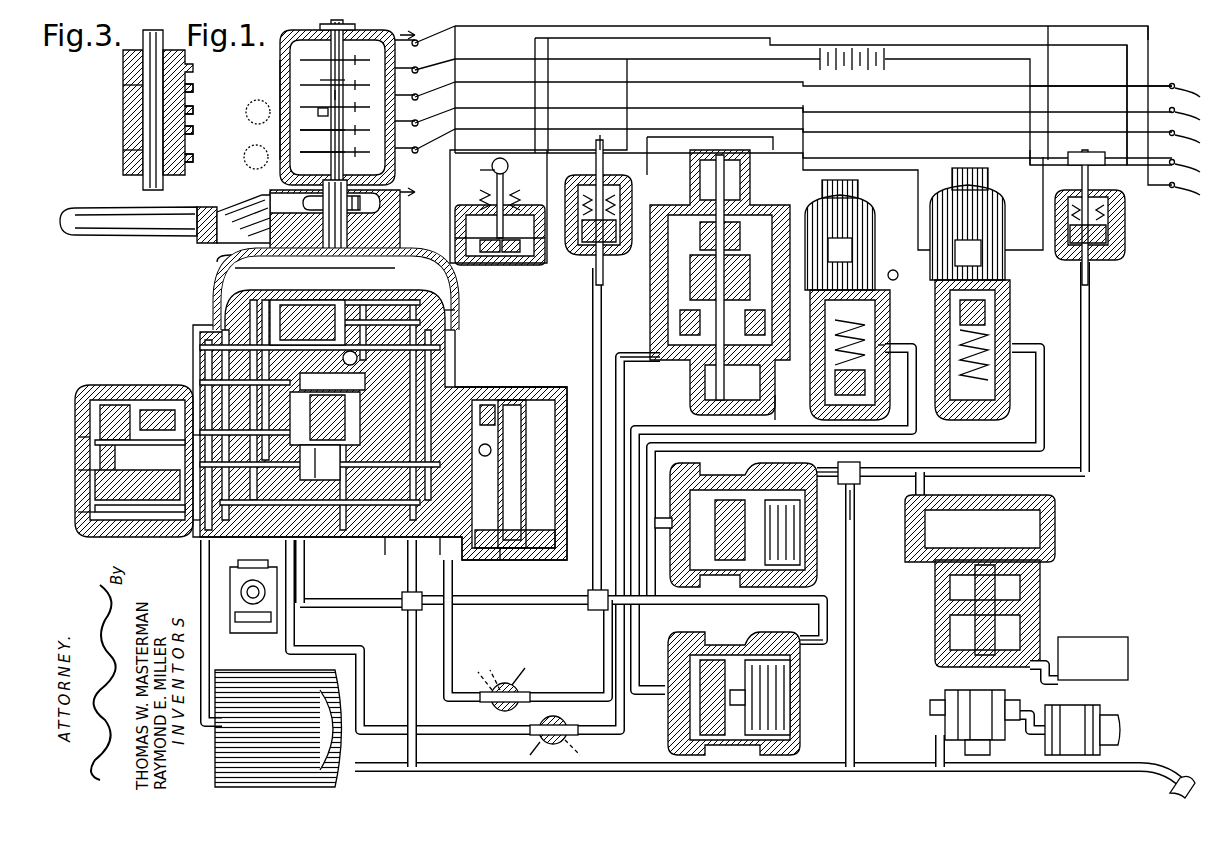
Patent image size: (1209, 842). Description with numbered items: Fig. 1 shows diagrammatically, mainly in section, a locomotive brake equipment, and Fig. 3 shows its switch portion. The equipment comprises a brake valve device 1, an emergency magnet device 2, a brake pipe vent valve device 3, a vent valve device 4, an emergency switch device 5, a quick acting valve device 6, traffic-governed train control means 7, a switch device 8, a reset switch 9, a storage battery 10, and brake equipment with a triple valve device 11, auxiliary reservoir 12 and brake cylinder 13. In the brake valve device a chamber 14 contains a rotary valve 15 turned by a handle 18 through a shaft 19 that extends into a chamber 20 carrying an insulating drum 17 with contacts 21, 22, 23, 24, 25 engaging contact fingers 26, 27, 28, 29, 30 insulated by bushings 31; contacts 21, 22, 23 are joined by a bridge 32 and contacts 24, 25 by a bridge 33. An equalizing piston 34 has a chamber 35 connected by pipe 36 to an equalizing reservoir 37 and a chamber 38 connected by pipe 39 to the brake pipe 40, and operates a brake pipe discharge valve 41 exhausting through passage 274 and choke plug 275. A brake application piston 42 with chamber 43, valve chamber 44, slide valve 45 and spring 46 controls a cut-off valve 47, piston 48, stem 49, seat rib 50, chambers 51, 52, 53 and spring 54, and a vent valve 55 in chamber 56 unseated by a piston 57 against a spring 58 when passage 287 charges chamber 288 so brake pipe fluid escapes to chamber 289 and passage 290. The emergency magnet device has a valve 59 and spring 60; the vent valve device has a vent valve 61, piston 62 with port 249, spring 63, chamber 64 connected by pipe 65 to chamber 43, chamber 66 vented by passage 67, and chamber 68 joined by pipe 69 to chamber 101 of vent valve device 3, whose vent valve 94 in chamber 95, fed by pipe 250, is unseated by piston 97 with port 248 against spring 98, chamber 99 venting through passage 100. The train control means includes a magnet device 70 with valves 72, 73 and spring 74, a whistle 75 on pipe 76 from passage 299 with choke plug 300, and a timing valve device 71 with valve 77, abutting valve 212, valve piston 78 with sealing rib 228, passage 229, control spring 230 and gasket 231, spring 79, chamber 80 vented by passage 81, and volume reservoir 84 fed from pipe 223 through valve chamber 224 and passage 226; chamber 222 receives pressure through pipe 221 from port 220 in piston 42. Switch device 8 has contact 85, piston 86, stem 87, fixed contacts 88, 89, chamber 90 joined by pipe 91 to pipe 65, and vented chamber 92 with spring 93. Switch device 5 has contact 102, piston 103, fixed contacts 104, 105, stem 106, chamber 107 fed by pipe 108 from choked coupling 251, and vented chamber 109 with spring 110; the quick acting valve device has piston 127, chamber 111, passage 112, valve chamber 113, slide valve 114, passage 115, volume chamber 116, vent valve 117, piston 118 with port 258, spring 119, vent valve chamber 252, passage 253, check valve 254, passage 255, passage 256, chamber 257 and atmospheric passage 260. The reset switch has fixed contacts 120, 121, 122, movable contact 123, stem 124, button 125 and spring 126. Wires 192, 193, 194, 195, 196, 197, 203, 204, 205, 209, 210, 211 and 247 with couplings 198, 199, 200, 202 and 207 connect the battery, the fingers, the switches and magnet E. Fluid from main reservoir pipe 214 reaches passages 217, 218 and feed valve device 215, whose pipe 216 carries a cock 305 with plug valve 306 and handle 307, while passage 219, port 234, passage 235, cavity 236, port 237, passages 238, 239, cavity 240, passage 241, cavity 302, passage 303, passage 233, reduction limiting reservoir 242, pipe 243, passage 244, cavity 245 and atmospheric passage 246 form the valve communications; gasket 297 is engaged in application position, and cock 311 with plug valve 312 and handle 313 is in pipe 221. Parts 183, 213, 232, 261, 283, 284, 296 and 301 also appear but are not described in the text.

In FIG. 1, the brake valve device 1 is at (208, 281).
In FIG. 1, the emergency magnet device 2 is at (1005, 196).
In FIG. 1, the brake pipe vent valve device 3 is at (753, 476).
In FIG. 1, the vent valve device 4 is at (732, 650).
In FIG. 1, the emergency switch device 5 is at (1117, 232).
In FIG. 1, the quick acting valve device 6 is at (1064, 506).
In FIG. 1, the train control means 7 is at (777, 221).
In FIG. 1, the switch device 8 is at (565, 176).
In FIG. 1, the reset switch 9 is at (476, 199).
In FIG. 1, the storage battery 10 is at (846, 72).
In FIG. 1, the triple valve device 11 is at (933, 712).
In FIG. 1, the auxiliary reservoir 12 is at (1135, 663).
In FIG. 1, the brake cylinder 13 is at (1106, 710).
In FIG. 1, the chamber 14 is at (228, 262).
In FIG. 1, the rotary valve 15 is at (252, 270).
In FIG. 3, the insulating sleeve or drum 17 is at (123, 113).
In FIG. 1, the insulating sleeve or drum 17 is at (295, 33).
In FIG. 1, the handle 18 is at (213, 214).
In FIG. 1, the shaft 19 is at (398, 224).
In FIG. 1, the chamber 20 is at (300, 63).
In FIG. 3, the contact 21 is at (193, 68).
In FIG. 1, the contact 21 is at (320, 82).
In FIG. 3, the contact 22 is at (193, 88).
In FIG. 1, the contact 22 is at (338, 95).
In FIG. 3, the contact 23 is at (193, 110).
In FIG. 1, the contact 23 is at (322, 116).
In FIG. 3, the contact 24 is at (193, 130).
In FIG. 1, the contact 24 is at (320, 131).
In FIG. 3, the contact 25 is at (193, 158).
In FIG. 1, the contact 25 is at (300, 165).
In FIG. 1, the contact finger 26 is at (395, 27).
In FIG. 1, the contact finger 27 is at (420, 72).
In FIG. 1, the contact finger 28 is at (416, 96).
In FIG. 1, the contact finger 29 is at (418, 122).
In FIG. 1, the contact finger 30 is at (418, 148).
In FIG. 1, the insulating bushings 31 is at (423, 96).
In FIG. 3, the bridge 32 is at (123, 85).
In FIG. 1, the bridge 32 is at (258, 112).
In FIG. 3, the bridge 33 is at (123, 150).
In FIG. 1, the bridge 33 is at (256, 157).
In FIG. 1, the equalizing piston 34 is at (332, 381).
In FIG. 1, the chamber 35 is at (294, 358).
In FIG. 1, the passage and pipe 36 is at (576, 416).
In FIG. 1, the equalizing reservoir 37 is at (397, 547).
In FIG. 1, the chamber 38 is at (312, 451).
In FIG. 1, the passage and pipe 39 is at (405, 625).
In FIG. 1, the brake pipe 40 is at (455, 761).
In FIG. 1, the brake pipe discharge valve 41 is at (307, 461).
In FIG. 1, the piston 42 is at (565, 555).
In FIG. 1, the chamber 43 is at (567, 565).
In FIG. 1, the valve chamber 44 is at (556, 517).
In FIG. 1, the slide valve 45 is at (556, 501).
In FIG. 1, the spring 46 is at (588, 594).
In FIG. 1, the valve 47 is at (178, 400).
In FIG. 1, the piston 48 is at (108, 400).
In FIG. 1, the stem 49 is at (145, 400).
In FIG. 1, the seat rib 50 is at (160, 400).
In FIG. 1, the chamber 51 is at (165, 400).
In FIG. 1, the chamber 52 is at (128, 400).
In FIG. 1, the chamber 53 is at (100, 400).
In FIG. 1, the spring 54 is at (82, 386).
In FIG. 1, the vent valve 55 is at (110, 530).
In FIG. 1, the chamber 56 is at (125, 537).
In FIG. 1, the piston 57 is at (90, 532).
In FIG. 1, the spring 58 is at (193, 525).
In FIG. 1, the valve 59 is at (1012, 285).
In FIG. 1, the spring 60 is at (995, 403).
In FIG. 1, the vent valve 61 is at (785, 742).
In FIG. 1, the piston 62 is at (722, 740).
In FIG. 1, the spring 63 is at (802, 675).
In FIG. 1, the chamber 64 is at (802, 720).
In FIG. 1, the pipe and passage 65 is at (515, 606).
In FIG. 1, the chamber 66 is at (733, 756).
In FIG. 1, the passage 67 is at (752, 742).
In FIG. 1, the chamber 68 is at (690, 700).
In FIG. 1, the pipe 69 is at (1044, 380).
In FIG. 1, the magnet device 70 is at (872, 222).
In FIG. 1, the timing valve device 71 is at (755, 182).
In FIG. 1, the valve 72 is at (850, 346).
In FIG. 1, the valve 73 is at (860, 398).
In FIG. 1, the spring 74 is at (850, 412).
In FIG. 1, the whistle 75 is at (895, 283).
In FIG. 1, the pipe 76 is at (888, 342).
In FIG. 1, the valve 77 is at (750, 227).
In FIG. 1, the valve piston 78 is at (752, 292).
In FIG. 1, the spring 79 is at (735, 165).
In FIG. 1, the chamber 80 is at (752, 278).
In FIG. 1, the passage 81 is at (752, 262).
In FIG. 1, the volume reservoir 84 is at (725, 398).
In FIG. 1, the movable contact member 85 is at (597, 137).
In FIG. 1, the piston 86 is at (615, 248).
In FIG. 1, the piston stem 87 is at (600, 163).
In FIG. 1, the fixed contact 88 is at (590, 150).
In FIG. 1, the fixed contact 89 is at (632, 125).
In FIG. 1, the chamber 90 is at (575, 250).
In FIG. 1, the pipe 91 is at (592, 328).
In FIG. 1, the vented chamber 92 is at (635, 178).
In FIG. 1, the spring 93 is at (633, 200).
In FIG. 1, the vent valve 94 is at (780, 575).
In FIG. 1, the chamber 95 is at (810, 560).
In FIG. 1, the piston 97 is at (728, 570).
In FIG. 1, the spring 98 is at (845, 512).
In FIG. 1, the chamber 99 is at (708, 490).
In FIG. 1, the passage 100 is at (750, 570).
In FIG. 1, the chamber 101 is at (680, 575).
In FIG. 1, the movable contact member 102 is at (1082, 155).
In FIG. 1, the piston 103 is at (1126, 238).
In FIG. 1, the fixed contact 104 is at (1072, 165).
In FIG. 1, the fixed contact 105 is at (1098, 156).
In FIG. 1, the piston stem 106 is at (1090, 172).
In FIG. 1, the chamber 107 is at (1115, 258).
In FIG. 1, the pipe 108 is at (1090, 420).
In FIG. 1, the vented chamber 109 is at (1110, 212).
In FIG. 1, the spring 110 is at (1110, 200).
In FIG. 1, the chamber 111 is at (935, 570).
In FIG. 1, the passage 112 is at (905, 548).
In FIG. 1, the valve chamber 113 is at (1042, 604).
In FIG. 1, the slide valve 114 is at (1042, 585).
In FIG. 1, the passage 115 is at (1042, 565).
In FIG. 1, the volume chamber 116 is at (1057, 530).
In FIG. 1, the vent valve 117 is at (940, 665).
In FIG. 1, the piston 118 is at (1099, 662).
In FIG. 1, the spring 119 is at (935, 648).
In FIG. 1, the fixed contact 120 is at (455, 238).
In FIG. 1, the fixed contact 121 is at (485, 255).
In FIG. 1, the fixed contact 122 is at (510, 255).
In FIG. 1, the movable contact member 123 is at (477, 159).
In FIG. 1, the stem 124 is at (508, 200).
In FIG. 1, the button 125 is at (505, 166).
In FIG. 1, the spring 126 is at (505, 185).
In FIG. 1, the piston 127 is at (935, 585).
In FIG. 1, the valve 183 is at (728, 376).
In FIG. 1, the wire 192 is at (765, 58).
In FIG. 1, the wire 193 is at (492, 152).
In FIG. 1, the wire 194 is at (497, 58).
In FIG. 1, the wire 195 is at (735, 82).
In FIG. 1, the wire 196 is at (742, 106).
In FIG. 1, the wire 197 is at (742, 129).
In FIG. 1, the coupling 198 is at (1190, 80).
In FIG. 1, the coupling 199 is at (1183, 104).
In FIG. 1, the coupling 200 is at (1187, 127).
In FIG. 1, the coupling 202 is at (1187, 153).
In FIG. 1, the wire 203 is at (1168, 182).
In FIG. 1, the wire 204 is at (995, 158).
In FIG. 1, the wire 205 is at (1000, 62).
In FIG. 1, the coupling 207 is at (1190, 183).
In FIG. 1, the wire 209 is at (1158, 32).
In FIG. 1, the wire 210 is at (1043, 235).
In FIG. 1, the wire 211 is at (918, 178).
In FIG. 1, the valve 212 is at (755, 240).
In FIG. 1, the reservoir 213 is at (268, 672).
In FIG. 1, the main reservoir pipe 214 is at (203, 636).
In FIG. 1, the feed valve device 215 is at (252, 562).
In FIG. 1, the pipe 216 is at (915, 432).
In FIG. 1, the passage 217 is at (196, 328).
In FIG. 1, the passage 218 is at (400, 509).
In FIG. 1, the passage 219 is at (307, 318).
In FIG. 1, the port 220 is at (560, 531).
In FIG. 1, the passage and pipe 221 is at (606, 638).
In FIG. 1, the chamber 222 is at (760, 198).
In FIG. 1, the pipe 223 is at (780, 413).
In FIG. 1, the valve chamber 224 is at (776, 412).
In FIG. 1, the passage 226 is at (752, 316).
In FIG. 1, the sealing rib 228 is at (668, 309).
In FIG. 1, the passage 229 is at (752, 305).
In FIG. 1, the control spring 230 is at (700, 251).
In FIG. 1, the gasket 231 is at (668, 275).
In FIG. 1, the chamber 232 is at (690, 229).
In FIG. 1, the passage 233 is at (668, 292).
In FIG. 1, the port 234 is at (299, 237).
In FIG. 1, the passage 235 is at (458, 333).
In FIG. 1, the cavity 236 is at (560, 390).
In FIG. 1, the port 237 is at (330, 301).
In FIG. 1, the passage 238 is at (330, 318).
In FIG. 1, the passage 239 is at (576, 481).
In FIG. 1, the cavity 240 is at (556, 465).
In FIG. 1, the passage 241 is at (78, 437).
In FIG. 1, the reduction limiting reservoir 242 is at (446, 547).
In FIG. 1, the pipe and passage 243 is at (400, 522).
In FIG. 1, the passage 244 is at (458, 314).
In FIG. 1, the cavity 245 is at (392, 272).
In FIG. 1, the atmospheric passage 246 is at (338, 358).
In FIG. 1, the wire 247 is at (452, 180).
In FIG. 1, the port 248 is at (680, 465).
In FIG. 1, the port 249 is at (718, 655).
In FIG. 1, the passage and pipe 250 is at (845, 484).
In FIG. 1, the choked coupling 251 is at (935, 472).
In FIG. 1, the vent valve chamber 252 is at (935, 632).
In FIG. 1, the passage 253 is at (1057, 549).
In FIG. 1, the check valve 254 is at (1042, 612).
In FIG. 1, the passage 255 is at (1042, 620).
In FIG. 1, the passage 256 is at (1042, 630).
In FIG. 1, the vent valve piston chamber 257 is at (1099, 674).
In FIG. 1, the port 258 is at (1099, 649).
In FIG. 1, the passage 260 is at (1005, 667).
In FIG. 1, the wire 261 is at (1127, 72).
In FIG. 1, the passage 274 is at (370, 480).
In FIG. 1, the choke plug 275 is at (323, 571).
In FIG. 1, the chamber 283 is at (1017, 521).
In FIG. 1, the chamber 284 is at (935, 605).
In FIG. 1, the passage 287 is at (326, 331).
In FIG. 1, the chamber 288 is at (78, 512).
In FIG. 1, the chamber 289 is at (78, 470).
In FIG. 1, the passage 290 is at (95, 537).
In FIG. 1, the stem 296 is at (1012, 312).
In FIG. 1, the gasket 297 is at (512, 606).
In FIG. 1, the passage 299 is at (905, 265).
In FIG. 1, the choke plug 300 is at (880, 380).
In FIG. 1, the passage 301 is at (707, 348).
In FIG. 1, the cavity 302 is at (497, 413).
In FIG. 1, the atmospheric passage 303 is at (473, 451).
In FIG. 1, the cock 305 is at (582, 748).
In FIG. 1, the plug valve 306 is at (565, 720).
In FIG. 1, the handle 307 is at (530, 748).
In FIG. 1, the cock 311 is at (530, 684).
In FIG. 1, the plug valve 312 is at (500, 680).
In FIG. 1, the handle 313 is at (523, 670).